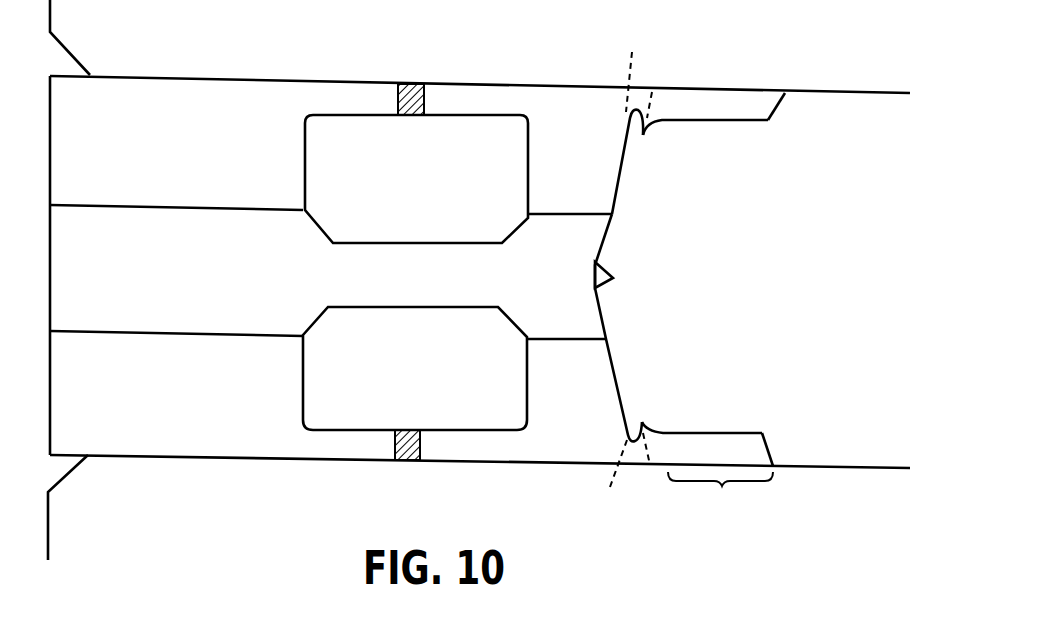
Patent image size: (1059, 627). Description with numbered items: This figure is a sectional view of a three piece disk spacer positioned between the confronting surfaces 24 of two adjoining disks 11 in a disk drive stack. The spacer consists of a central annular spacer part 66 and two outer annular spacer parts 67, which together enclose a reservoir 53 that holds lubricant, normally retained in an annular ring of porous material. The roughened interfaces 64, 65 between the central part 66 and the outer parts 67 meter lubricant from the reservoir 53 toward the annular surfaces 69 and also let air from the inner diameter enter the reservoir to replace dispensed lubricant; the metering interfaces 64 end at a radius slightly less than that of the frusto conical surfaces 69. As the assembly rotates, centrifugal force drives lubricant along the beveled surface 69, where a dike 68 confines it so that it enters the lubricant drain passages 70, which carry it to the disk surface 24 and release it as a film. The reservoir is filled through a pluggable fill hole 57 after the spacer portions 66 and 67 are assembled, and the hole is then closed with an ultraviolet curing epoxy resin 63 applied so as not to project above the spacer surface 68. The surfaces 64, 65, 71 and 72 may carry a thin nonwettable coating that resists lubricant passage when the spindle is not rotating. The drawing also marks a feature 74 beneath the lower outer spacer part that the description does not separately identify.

The disk 11 is at (93, 43).
The confronting disk surface 24 is at (842, 93).
The reservoir 53 is at (406, 198).
The pluggable fill hole 57 is at (425, 87).
The ultraviolet curing epoxy resin 63 is at (412, 85).
The metering interface 64 is at (575, 215).
The roughened interface 65 is at (233, 210).
The central annular spacer part 66 is at (124, 284).
The outer annular spacer part 67 is at (124, 154).
The dike 68 is at (645, 135).
The frusto conical surface 69 is at (618, 180).
The lubricant drain passage 70 is at (623, 272).
The surface 71 is at (621, 279).
The surface 72 is at (782, 113).
The flange width 74 is at (720, 497).